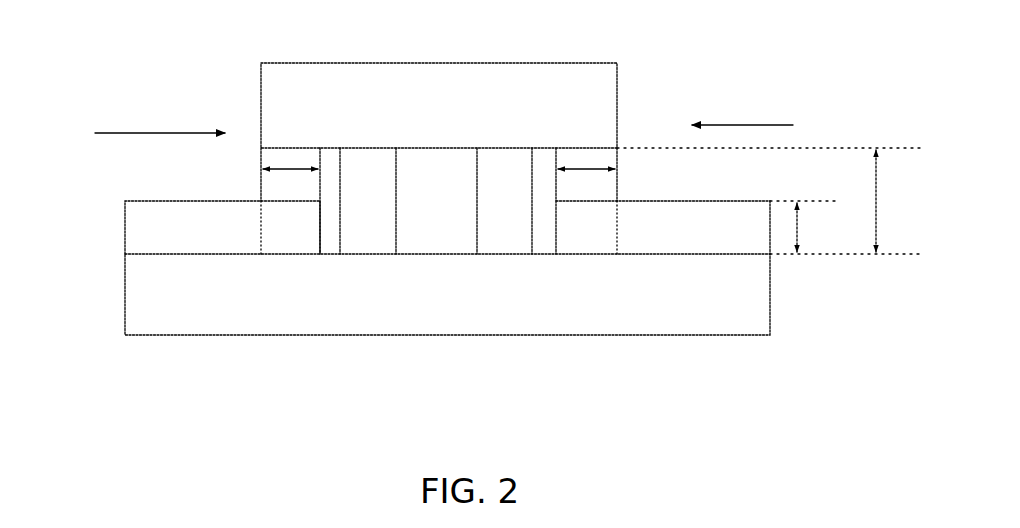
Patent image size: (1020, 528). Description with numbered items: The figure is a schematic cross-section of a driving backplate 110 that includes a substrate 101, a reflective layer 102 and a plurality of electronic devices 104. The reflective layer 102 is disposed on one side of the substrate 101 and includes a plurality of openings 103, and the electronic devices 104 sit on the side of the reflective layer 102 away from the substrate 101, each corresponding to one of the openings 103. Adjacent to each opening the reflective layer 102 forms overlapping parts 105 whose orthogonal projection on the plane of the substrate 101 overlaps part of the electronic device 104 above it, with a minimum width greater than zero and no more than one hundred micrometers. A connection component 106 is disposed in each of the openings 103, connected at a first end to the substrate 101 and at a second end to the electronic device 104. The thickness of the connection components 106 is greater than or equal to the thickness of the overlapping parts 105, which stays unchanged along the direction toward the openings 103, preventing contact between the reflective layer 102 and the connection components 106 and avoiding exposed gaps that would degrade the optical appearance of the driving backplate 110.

The driving backplate 110 is at (85, 45).
The substrate 101 is at (153, 310).
The reflective layer 102 is at (155, 235).
The openings 103 is at (430, 230).
The electronic devices 104 is at (303, 118).
The overlapping parts 105 is at (288, 213).
The connection components 106 is at (510, 178).